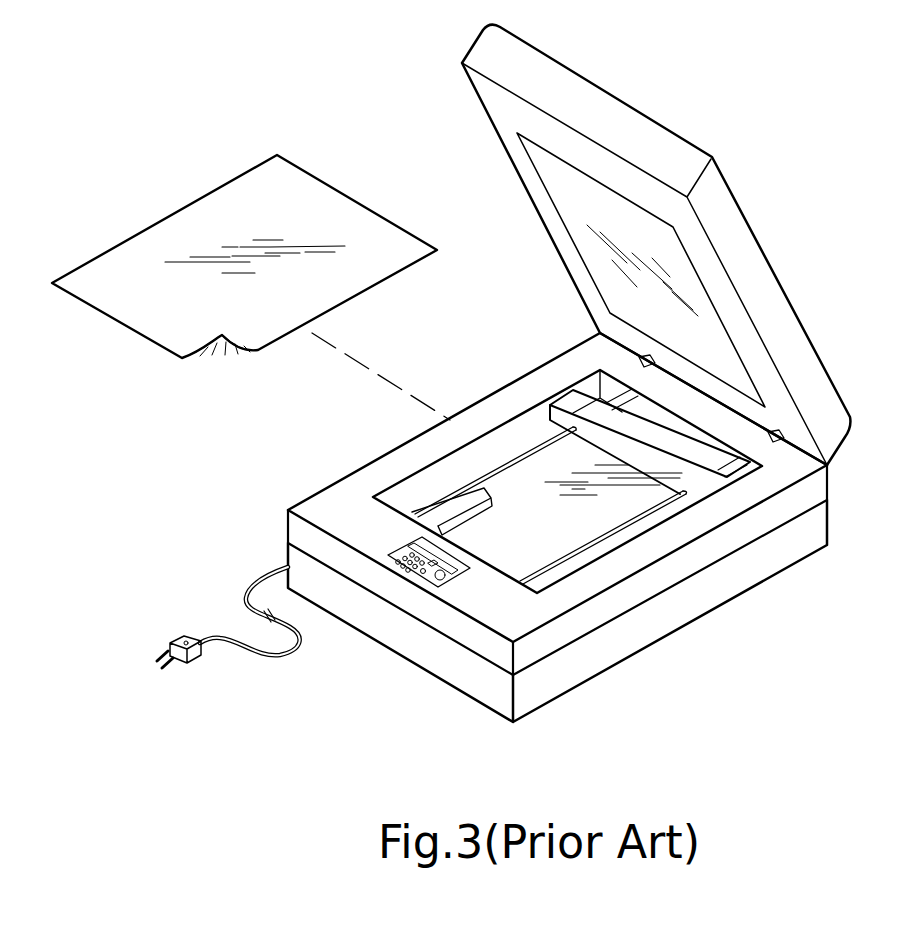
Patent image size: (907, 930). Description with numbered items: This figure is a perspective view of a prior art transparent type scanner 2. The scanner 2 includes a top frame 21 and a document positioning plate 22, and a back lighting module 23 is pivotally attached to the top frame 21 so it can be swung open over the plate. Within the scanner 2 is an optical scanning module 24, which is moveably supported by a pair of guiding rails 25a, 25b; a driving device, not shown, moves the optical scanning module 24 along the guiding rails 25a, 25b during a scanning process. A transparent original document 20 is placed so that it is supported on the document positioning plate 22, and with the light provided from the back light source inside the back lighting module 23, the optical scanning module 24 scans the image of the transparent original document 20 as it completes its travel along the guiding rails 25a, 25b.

The transparent type scanner 2 is at (417, 647).
The transparent original document 20 is at (217, 213).
The top frame 21 is at (770, 482).
The document positioning plate 22 is at (537, 540).
The back lighting module 23 is at (770, 287).
The optical scanning module 24 is at (715, 483).
The guiding rail 25a is at (533, 437).
The guiding rail 25b is at (643, 513).